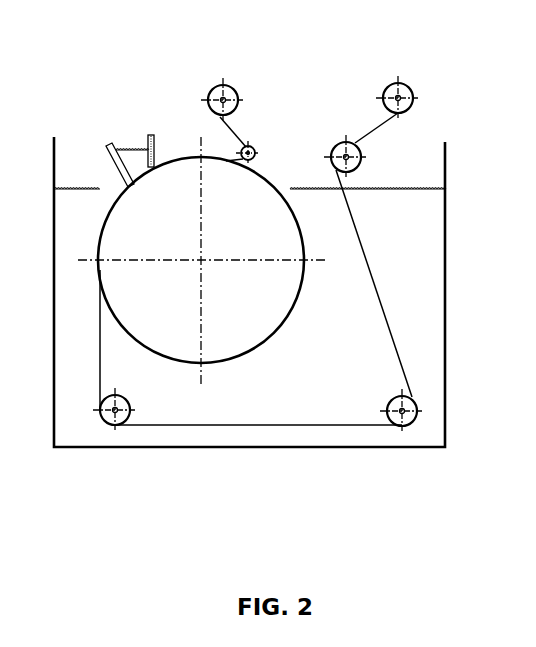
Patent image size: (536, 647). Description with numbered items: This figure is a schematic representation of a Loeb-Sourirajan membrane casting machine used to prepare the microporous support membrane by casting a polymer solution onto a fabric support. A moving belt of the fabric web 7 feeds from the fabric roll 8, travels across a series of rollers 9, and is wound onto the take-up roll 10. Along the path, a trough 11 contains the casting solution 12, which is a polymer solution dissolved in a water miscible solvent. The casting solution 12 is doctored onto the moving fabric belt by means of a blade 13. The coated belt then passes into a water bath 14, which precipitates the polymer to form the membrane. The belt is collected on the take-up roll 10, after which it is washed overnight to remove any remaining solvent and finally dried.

The fabric web 7 is at (366, 125).
The fabric roll 8 is at (235, 82).
The rollers 9 is at (255, 140).
The take-up roll 10 is at (410, 80).
The trough 11 is at (156, 128).
The casting solution 12 is at (137, 145).
The blade 13 is at (107, 153).
The water bath 14 is at (425, 262).